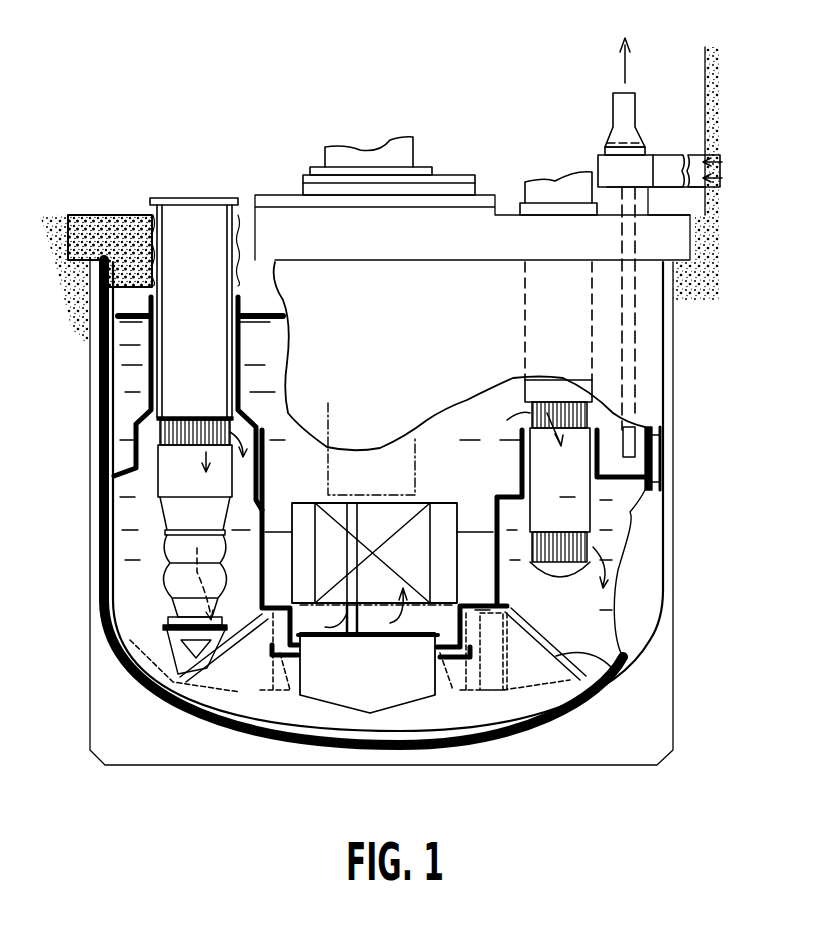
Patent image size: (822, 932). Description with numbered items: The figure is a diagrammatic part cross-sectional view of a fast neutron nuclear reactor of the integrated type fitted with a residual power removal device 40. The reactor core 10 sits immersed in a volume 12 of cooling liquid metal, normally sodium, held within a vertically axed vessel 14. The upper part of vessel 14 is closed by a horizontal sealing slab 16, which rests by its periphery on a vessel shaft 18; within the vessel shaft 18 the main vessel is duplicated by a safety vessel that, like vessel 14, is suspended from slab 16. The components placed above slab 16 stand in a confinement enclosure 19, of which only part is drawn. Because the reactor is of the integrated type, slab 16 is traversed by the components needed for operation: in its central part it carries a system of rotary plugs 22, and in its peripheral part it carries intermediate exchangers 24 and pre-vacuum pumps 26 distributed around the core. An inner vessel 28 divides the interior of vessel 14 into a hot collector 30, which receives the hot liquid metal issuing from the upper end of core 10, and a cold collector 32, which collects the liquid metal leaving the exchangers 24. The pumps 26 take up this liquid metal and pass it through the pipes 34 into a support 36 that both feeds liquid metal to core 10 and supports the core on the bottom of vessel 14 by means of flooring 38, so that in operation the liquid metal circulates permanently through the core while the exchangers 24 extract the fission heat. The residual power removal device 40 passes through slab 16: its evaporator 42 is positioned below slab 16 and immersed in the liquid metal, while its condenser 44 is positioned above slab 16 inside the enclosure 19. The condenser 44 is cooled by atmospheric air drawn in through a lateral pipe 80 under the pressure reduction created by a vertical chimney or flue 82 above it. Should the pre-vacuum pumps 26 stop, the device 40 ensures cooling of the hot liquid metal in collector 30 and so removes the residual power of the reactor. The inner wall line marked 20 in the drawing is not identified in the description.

The reactor core 10 is at (328, 520).
The volume of cooling liquid metal 12 is at (263, 350).
The vessel 14 is at (110, 512).
The sealing slab 16 is at (113, 222).
The vessel shaft 18 is at (80, 412).
The confinement enclosure 19 is at (705, 70).
The inner tank wall 20 is at (104, 572).
The rotary plugs 22 is at (425, 153).
The intermediate exchangers 24 is at (542, 387).
The pre-vacuum pumps 26 is at (212, 213).
The inner vessel 28 is at (489, 544).
The hot collector 30 is at (480, 434).
The cold collector 32 is at (580, 621).
The pipes 34 is at (258, 636).
The support 36 is at (420, 622).
The flooring 38 is at (610, 673).
The residual power removal device 40 is at (636, 327).
The evaporator 42 is at (633, 443).
The condenser 44 is at (603, 164).
The lateral pipe 80 is at (671, 167).
The chimney or flue 82 is at (615, 99).